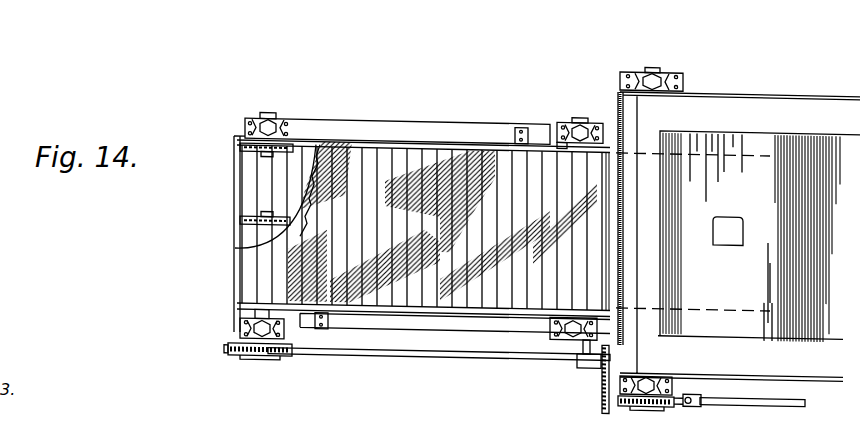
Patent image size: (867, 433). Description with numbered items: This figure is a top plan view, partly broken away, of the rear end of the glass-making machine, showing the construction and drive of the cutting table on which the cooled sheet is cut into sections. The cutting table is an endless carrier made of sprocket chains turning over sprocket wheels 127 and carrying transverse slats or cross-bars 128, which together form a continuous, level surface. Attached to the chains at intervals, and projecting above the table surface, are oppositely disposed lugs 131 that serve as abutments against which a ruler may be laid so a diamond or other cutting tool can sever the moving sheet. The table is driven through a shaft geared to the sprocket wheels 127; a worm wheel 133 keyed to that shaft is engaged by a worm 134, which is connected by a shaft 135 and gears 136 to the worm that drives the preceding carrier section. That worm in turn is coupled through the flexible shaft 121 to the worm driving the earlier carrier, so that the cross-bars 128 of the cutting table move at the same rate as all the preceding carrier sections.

The flexible shaft 121 is at (762, 388).
The sprocket wheels 127 is at (240, 220).
The transverse slats or cross-bars 128 is at (453, 148).
The lugs 131 is at (558, 145).
The worm wheel 133 is at (236, 355).
The worm 134 is at (262, 356).
The shaft 135 is at (390, 353).
The gears 136 is at (603, 370).